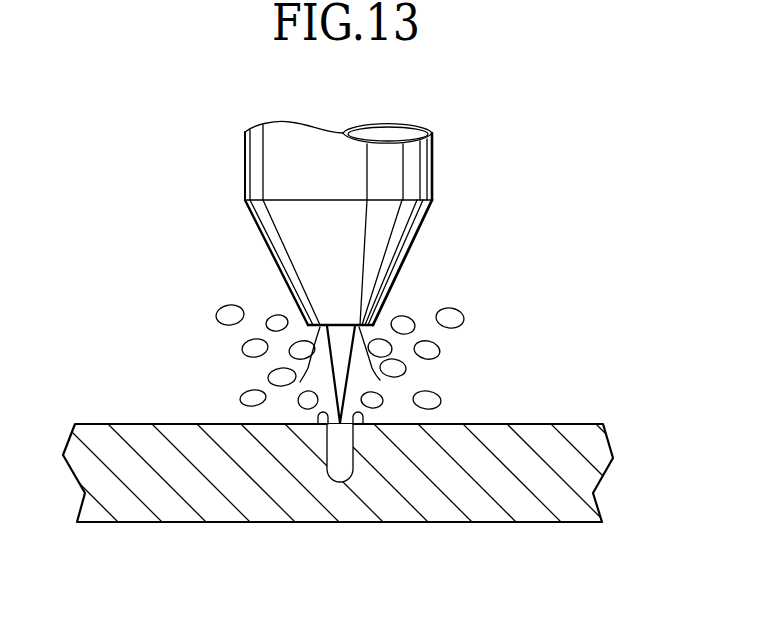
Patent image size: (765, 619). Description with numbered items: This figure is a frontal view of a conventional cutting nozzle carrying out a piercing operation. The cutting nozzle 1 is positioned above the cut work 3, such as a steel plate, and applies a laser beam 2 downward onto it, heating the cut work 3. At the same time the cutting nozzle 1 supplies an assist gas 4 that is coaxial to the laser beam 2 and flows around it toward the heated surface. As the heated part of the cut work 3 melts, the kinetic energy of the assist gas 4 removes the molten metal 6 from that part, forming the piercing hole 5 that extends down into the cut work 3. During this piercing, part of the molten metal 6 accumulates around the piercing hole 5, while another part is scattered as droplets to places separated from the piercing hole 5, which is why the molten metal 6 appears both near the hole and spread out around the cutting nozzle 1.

The cutting nozzle 1 is at (434, 162).
The laser beam 2 is at (343, 383).
The cut work 3 is at (512, 424).
The assist gas 4 is at (315, 357).
The piercing hole 5 is at (340, 482).
The molten metal 6 is at (227, 305).